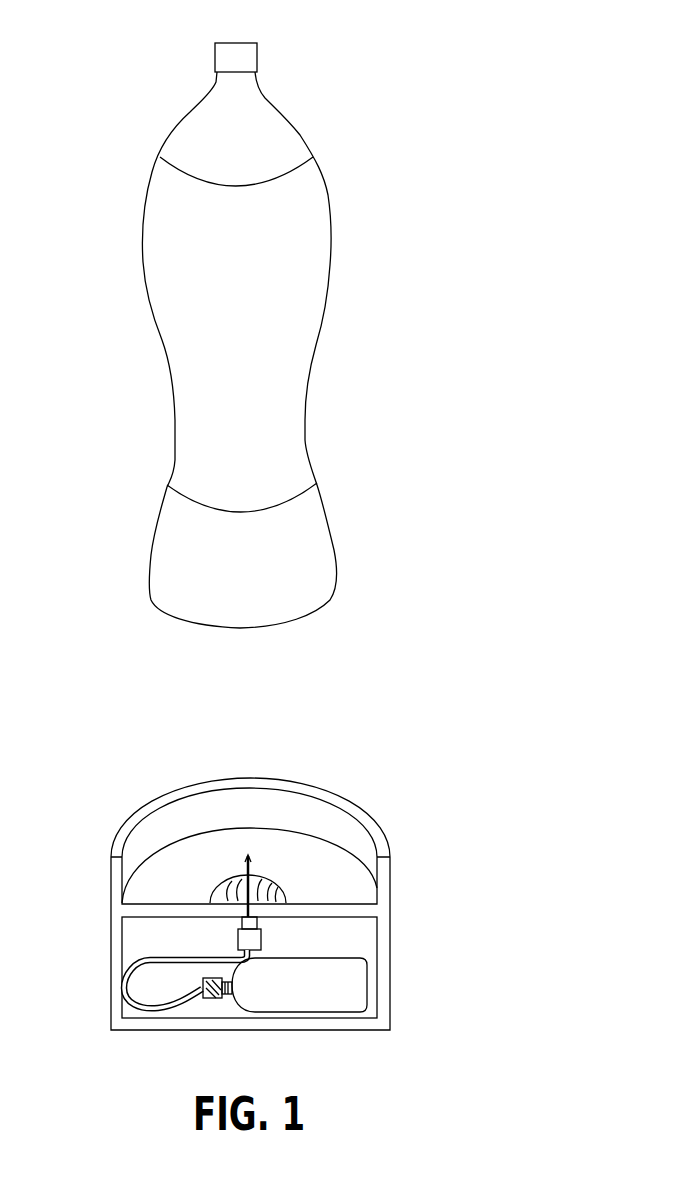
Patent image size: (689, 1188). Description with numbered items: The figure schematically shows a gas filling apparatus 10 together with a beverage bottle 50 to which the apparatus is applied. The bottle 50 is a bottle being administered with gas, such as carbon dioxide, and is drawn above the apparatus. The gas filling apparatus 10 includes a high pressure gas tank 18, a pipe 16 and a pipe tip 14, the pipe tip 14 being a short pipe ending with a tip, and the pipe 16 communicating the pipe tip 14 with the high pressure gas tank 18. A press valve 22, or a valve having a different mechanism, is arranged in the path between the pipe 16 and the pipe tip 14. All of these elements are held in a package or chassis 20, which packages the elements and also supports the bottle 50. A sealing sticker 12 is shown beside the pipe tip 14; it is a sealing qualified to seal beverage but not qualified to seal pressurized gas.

The gas filling apparatus 10 is at (297, 904).
The sealing sticker 12 is at (262, 885).
The pipe tip 14 is at (245, 880).
The pipe 16 is at (135, 957).
The high pressure gas tank 18 is at (307, 975).
The package or chassis 20 is at (390, 925).
The press valve 22 is at (238, 933).
The bottle 50 is at (327, 212).